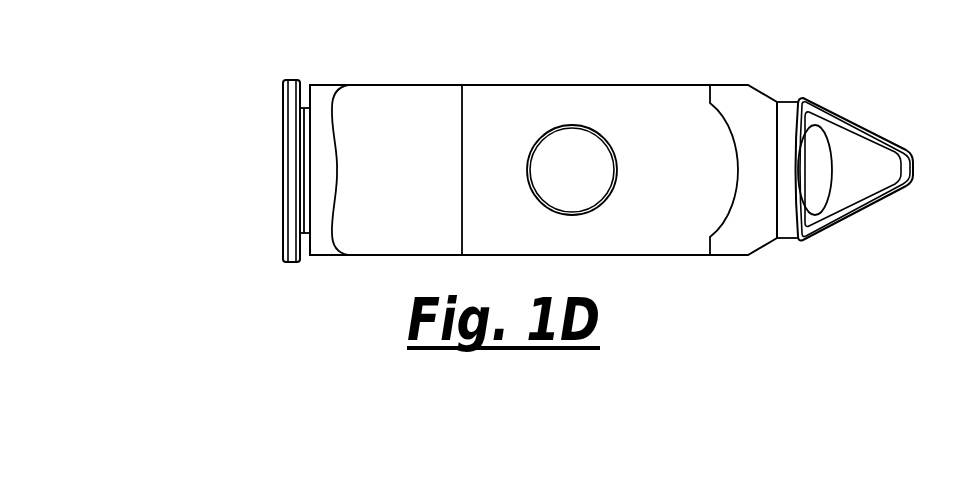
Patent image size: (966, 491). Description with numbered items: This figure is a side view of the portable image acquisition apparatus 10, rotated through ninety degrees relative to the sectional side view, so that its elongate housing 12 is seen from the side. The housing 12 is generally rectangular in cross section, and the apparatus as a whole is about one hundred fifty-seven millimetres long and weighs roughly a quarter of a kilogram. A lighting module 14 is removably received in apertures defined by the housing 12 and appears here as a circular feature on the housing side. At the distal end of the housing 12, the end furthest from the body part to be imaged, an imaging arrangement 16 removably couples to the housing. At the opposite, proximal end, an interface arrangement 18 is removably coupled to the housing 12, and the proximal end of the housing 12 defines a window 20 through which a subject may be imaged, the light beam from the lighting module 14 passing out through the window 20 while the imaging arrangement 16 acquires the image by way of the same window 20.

The portable image acquisition apparatus 10 is at (840, 40).
The housing 12 is at (673, 98).
The lighting module 14 is at (590, 183).
The imaging arrangement 16 is at (316, 193).
The interface arrangement 18 is at (868, 150).
The window 20 is at (815, 188).